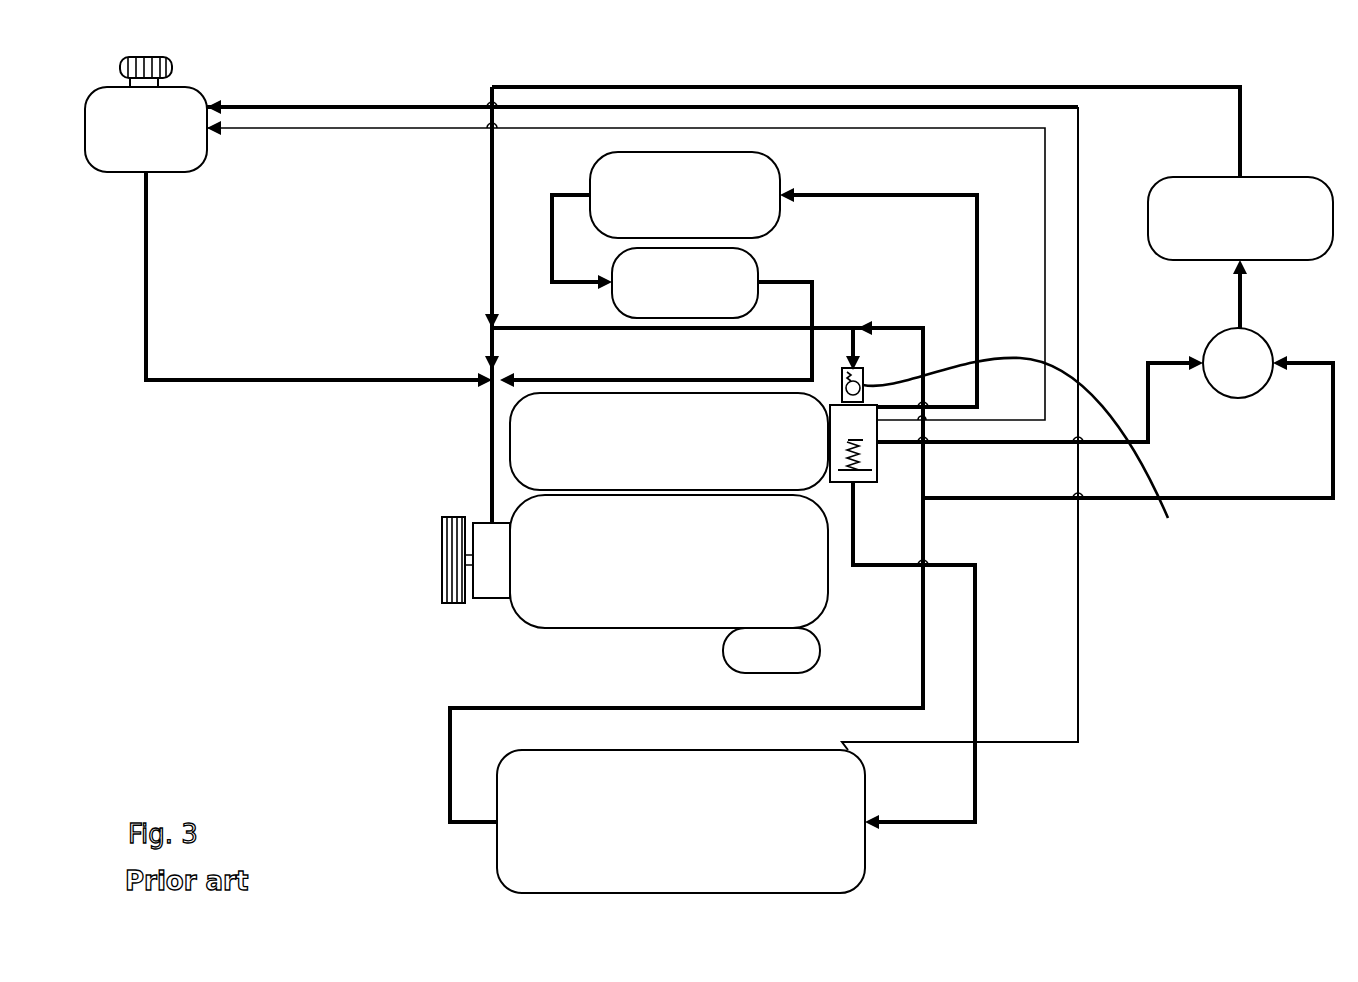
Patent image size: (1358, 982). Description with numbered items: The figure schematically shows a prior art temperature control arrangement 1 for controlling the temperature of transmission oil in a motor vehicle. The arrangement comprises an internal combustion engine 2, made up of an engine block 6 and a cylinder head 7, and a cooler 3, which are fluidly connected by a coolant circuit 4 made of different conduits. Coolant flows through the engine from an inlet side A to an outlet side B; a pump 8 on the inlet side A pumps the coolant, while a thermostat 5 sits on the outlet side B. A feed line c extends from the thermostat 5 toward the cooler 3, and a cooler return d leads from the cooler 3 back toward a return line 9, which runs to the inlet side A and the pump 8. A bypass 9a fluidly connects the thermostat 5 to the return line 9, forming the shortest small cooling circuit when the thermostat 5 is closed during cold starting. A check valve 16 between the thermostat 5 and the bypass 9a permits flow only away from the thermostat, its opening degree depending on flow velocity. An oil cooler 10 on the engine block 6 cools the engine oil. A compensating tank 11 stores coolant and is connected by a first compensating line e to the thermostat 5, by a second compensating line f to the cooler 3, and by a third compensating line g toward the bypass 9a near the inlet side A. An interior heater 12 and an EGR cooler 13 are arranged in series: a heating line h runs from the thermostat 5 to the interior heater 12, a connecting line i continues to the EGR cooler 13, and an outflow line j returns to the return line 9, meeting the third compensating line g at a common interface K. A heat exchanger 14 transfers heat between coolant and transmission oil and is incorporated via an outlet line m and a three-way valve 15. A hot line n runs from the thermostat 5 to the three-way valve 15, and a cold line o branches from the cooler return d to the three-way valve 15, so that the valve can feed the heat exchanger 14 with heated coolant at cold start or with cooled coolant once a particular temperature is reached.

The temperature control arrangement 1 is at (550, 643).
The internal combustion engine 2 is at (604, 575).
The cooler 3 is at (688, 838).
The coolant circuit 4 is at (1105, 645).
The thermostat 5 is at (878, 463).
The engine block 6 is at (676, 575).
The cylinder head 7 is at (676, 457).
The pump 8 is at (490, 590).
The return line 9 is at (565, 328).
The bypass 9a is at (865, 365).
The oil cooler 10 is at (785, 667).
The compensating tank 11 is at (160, 142).
The interior heater 12 is at (700, 210).
The EGR cooler 13 is at (700, 298).
The heat exchanger 14 is at (1255, 233).
The three-way valve 15 is at (1253, 378).
The check valve 16 is at (1017, 440).
The inlet side A is at (420, 488).
The outlet side B is at (978, 470).
The common interface K is at (470, 352).
The feed line c is at (985, 705).
The cooler return d is at (625, 708).
The first compensating line e is at (1045, 215).
The second compensating line f is at (1078, 165).
The third compensating line g is at (223, 377).
The heating line h is at (973, 325).
The connecting line i is at (552, 232).
The outflow line j is at (792, 282).
The outlet line m is at (1152, 87).
The hot line n is at (1152, 425).
The cold line o is at (1295, 498).